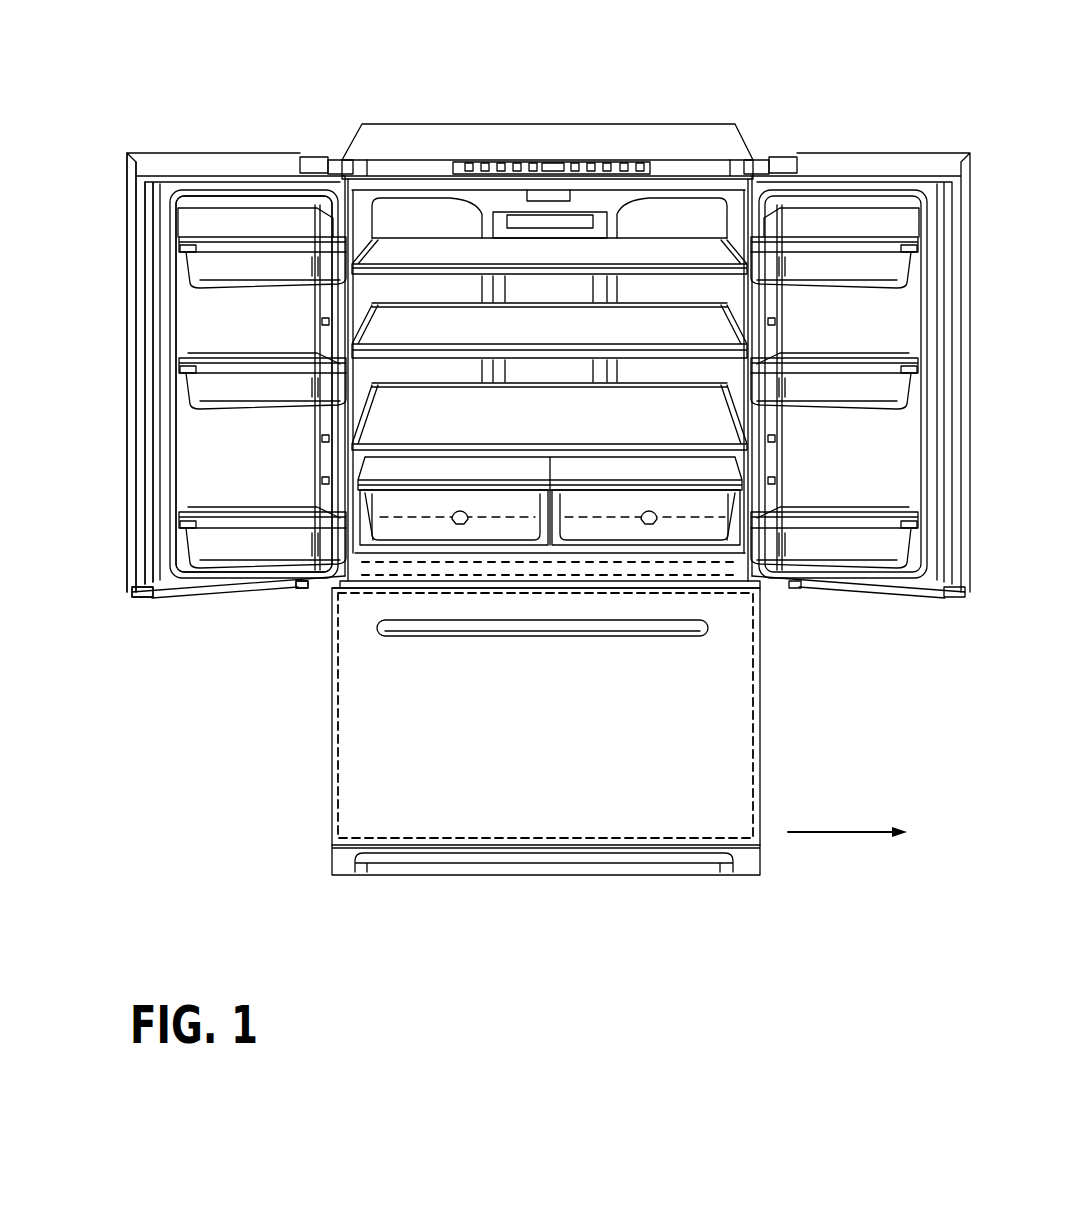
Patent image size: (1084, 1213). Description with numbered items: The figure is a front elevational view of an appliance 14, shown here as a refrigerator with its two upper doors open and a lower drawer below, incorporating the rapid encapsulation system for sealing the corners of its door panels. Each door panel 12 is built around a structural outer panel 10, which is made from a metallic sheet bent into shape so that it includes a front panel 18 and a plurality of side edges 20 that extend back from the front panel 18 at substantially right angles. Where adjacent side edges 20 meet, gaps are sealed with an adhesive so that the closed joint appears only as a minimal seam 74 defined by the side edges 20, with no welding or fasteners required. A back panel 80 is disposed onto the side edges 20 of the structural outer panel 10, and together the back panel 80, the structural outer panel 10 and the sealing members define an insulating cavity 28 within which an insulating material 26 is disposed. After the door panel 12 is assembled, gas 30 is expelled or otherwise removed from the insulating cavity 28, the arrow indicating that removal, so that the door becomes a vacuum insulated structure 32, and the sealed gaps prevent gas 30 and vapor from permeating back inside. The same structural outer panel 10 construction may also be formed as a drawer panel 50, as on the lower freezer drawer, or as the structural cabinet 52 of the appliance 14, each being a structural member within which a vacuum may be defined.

The structural outer panel 10 is at (260, 140).
The door panel 12 is at (125, 343).
The appliance 14 is at (588, 70).
The front panel 18 is at (425, 733).
The side edges 20 is at (135, 282).
The insulating material 26 is at (137, 257).
The insulating cavity 28 is at (125, 203).
The gas 30 is at (840, 832).
The vacuum insulated structure 32 is at (240, 605).
The drawer panel 50 is at (325, 679).
The structural cabinet 52 is at (428, 115).
The seam 74 is at (130, 590).
The back panel 80 is at (237, 457).